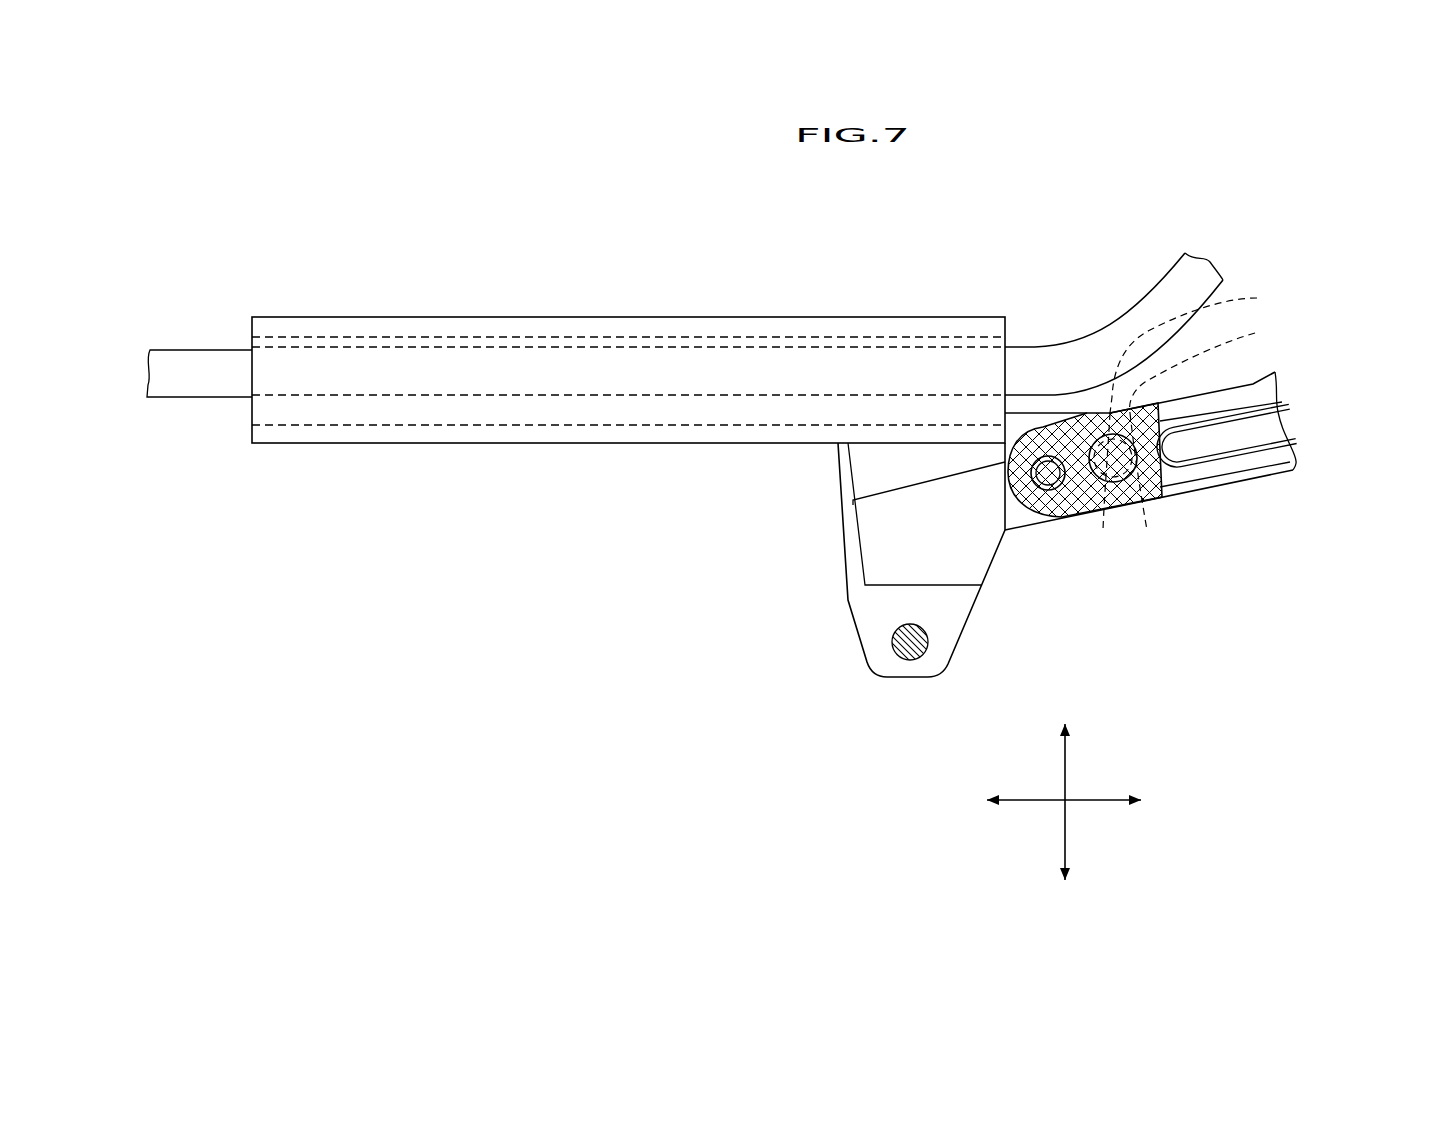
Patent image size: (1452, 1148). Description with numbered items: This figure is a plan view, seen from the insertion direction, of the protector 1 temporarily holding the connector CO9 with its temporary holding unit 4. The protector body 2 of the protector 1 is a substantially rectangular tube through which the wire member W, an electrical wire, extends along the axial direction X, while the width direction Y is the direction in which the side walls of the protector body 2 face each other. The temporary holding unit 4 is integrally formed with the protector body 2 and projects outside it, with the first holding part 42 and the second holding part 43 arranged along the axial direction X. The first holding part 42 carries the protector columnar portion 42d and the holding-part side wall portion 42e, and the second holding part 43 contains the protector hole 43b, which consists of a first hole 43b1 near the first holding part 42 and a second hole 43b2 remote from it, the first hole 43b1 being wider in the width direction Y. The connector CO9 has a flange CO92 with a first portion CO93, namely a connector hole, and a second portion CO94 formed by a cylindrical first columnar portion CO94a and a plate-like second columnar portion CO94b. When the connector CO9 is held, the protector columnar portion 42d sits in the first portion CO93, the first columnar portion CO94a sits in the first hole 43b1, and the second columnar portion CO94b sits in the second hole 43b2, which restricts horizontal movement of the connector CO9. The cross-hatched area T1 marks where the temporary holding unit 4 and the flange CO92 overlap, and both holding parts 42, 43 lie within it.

The protector 1 is at (256, 470).
The protector body 2 is at (332, 446).
The temporary holding unit 4 is at (796, 494).
The first holding part 42 is at (1045, 548).
The protector columnar portion 42d is at (1035, 470).
The holding-part side wall portion 42e is at (1027, 420).
The second holding part 43 is at (1085, 408).
The protector hole 43b is at (1197, 607).
The first hole 43b1 is at (1103, 530).
The second hole 43b2 is at (1147, 530).
The area T1 is at (1158, 500).
The connector CO9 is at (1274, 482).
The flange CO92 is at (1268, 392).
The first portion CO93 is at (1043, 512).
The second portion CO94 is at (1337, 280).
The first columnar portion CO94a is at (1219, 349).
The second columnar portion CO94b is at (1230, 367).
The wire member W is at (212, 398).
The axial direction X is at (1107, 802).
The width direction Y is at (1067, 770).